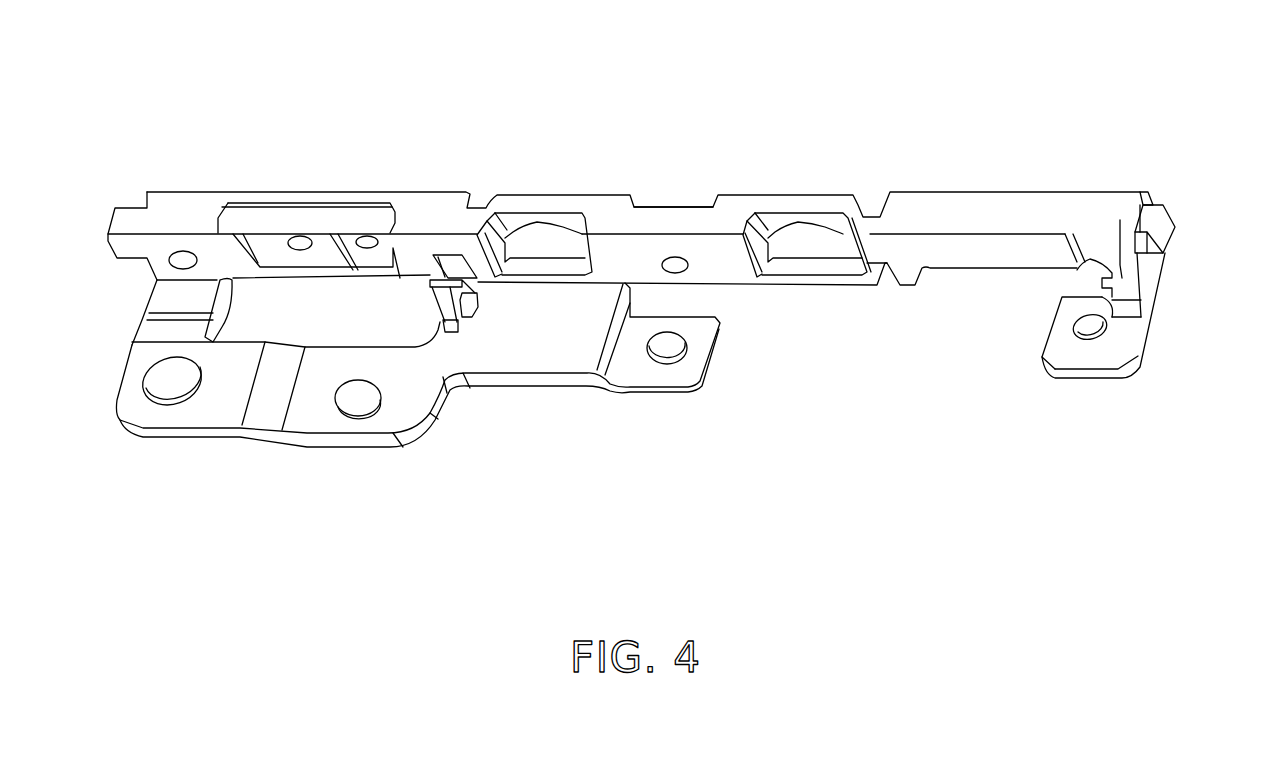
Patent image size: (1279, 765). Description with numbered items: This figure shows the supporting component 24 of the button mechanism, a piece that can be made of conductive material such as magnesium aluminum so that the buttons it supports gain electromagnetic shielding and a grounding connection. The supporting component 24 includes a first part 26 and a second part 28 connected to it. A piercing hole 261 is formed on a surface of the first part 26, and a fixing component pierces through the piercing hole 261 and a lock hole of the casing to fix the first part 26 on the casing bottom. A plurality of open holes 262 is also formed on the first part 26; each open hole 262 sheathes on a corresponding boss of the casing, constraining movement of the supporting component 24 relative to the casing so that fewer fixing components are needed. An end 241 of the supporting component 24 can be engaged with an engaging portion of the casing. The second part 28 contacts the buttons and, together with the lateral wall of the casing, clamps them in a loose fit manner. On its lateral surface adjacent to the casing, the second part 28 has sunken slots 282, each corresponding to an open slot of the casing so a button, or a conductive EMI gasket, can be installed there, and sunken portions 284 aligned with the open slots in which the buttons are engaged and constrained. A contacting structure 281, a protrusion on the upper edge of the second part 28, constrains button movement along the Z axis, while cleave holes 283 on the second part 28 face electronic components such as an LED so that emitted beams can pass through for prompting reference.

The supporting component 24 is at (1032, 110).
The first part 26 is at (535, 345).
The second part 28 is at (600, 205).
The end 241 is at (1150, 277).
The piercing hole 261 is at (674, 356).
The open hole 262 is at (358, 410).
The contacting structure 281 is at (1128, 196).
The sunken slot 282 is at (676, 196).
The cleave hole 283 is at (296, 236).
The sunken portion 284 is at (320, 188).